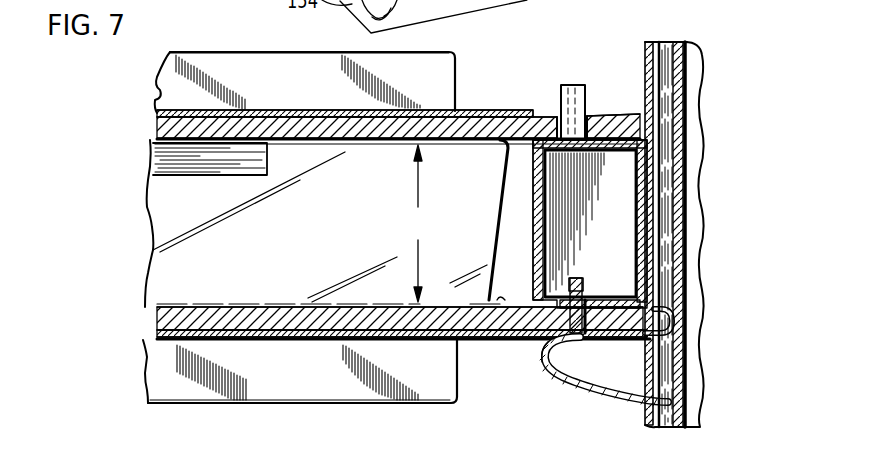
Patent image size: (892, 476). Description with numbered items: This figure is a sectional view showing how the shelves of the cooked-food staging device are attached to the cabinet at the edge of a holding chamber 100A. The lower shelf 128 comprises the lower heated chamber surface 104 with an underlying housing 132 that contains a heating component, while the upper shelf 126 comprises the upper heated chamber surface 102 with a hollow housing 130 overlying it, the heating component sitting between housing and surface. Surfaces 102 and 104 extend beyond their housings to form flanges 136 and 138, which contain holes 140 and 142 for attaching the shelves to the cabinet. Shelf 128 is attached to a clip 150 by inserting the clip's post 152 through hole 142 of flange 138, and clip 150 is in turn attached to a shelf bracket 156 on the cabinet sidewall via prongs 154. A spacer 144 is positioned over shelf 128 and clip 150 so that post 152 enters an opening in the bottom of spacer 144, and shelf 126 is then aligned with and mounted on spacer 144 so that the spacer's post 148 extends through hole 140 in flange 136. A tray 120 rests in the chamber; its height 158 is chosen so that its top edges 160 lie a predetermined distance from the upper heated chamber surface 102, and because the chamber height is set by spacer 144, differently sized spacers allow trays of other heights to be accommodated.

The holding chamber 100A is at (538, 352).
The upper heated chamber surface 102 is at (512, 146).
The lower heated chamber surface 104 is at (505, 300).
The tray 120 is at (182, 230).
The shelf 126 is at (145, 89).
The shelf 128 is at (140, 364).
The hollow housing 130 is at (438, 63).
The housing 132 is at (222, 377).
The flange 136 is at (165, 131).
The flange 138 is at (145, 322).
The hole 140 is at (557, 115).
The hole 142 is at (588, 318).
The spacer 144 is at (530, 236).
The post 148 is at (575, 84).
The clip 150 is at (610, 393).
The post 152 is at (583, 282).
The prong 154 is at (683, 316).
The shelf bracket 156 is at (657, 69).
The height 158 is at (413, 223).
The top edge 160 is at (349, 145).